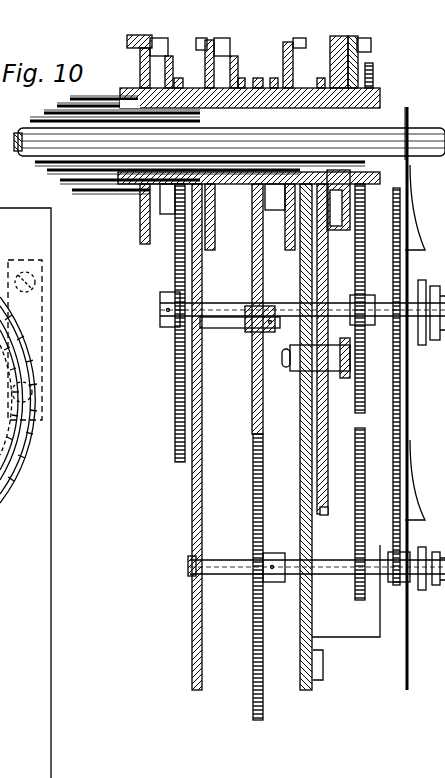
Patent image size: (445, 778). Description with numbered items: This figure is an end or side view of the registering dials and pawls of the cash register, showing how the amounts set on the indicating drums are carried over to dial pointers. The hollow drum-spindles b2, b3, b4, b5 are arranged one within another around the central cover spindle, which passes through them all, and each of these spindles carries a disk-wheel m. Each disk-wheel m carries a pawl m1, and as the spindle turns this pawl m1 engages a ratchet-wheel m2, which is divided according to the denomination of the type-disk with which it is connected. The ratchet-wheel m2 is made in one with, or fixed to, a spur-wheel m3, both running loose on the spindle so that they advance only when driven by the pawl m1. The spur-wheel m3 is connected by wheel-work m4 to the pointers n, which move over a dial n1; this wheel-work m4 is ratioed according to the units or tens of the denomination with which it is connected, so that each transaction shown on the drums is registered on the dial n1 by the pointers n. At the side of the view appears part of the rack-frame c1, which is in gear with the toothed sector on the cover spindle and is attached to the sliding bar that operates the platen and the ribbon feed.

The disk-wheel m is at (140, 80).
The pawl m1 is at (140, 38).
The ratchet-wheel m2 is at (190, 70).
The spur-wheel m3 is at (210, 86).
The wheel-work m4 is at (355, 262).
The hollow spindle b2 is at (40, 120).
The hollow spindle b3 is at (46, 112).
The hollow spindle b4 is at (60, 105).
The hollow spindle b5 is at (80, 98).
The pointers n is at (422, 342).
The dial n1 is at (418, 398).
The rack-frame c1 is at (27, 493).